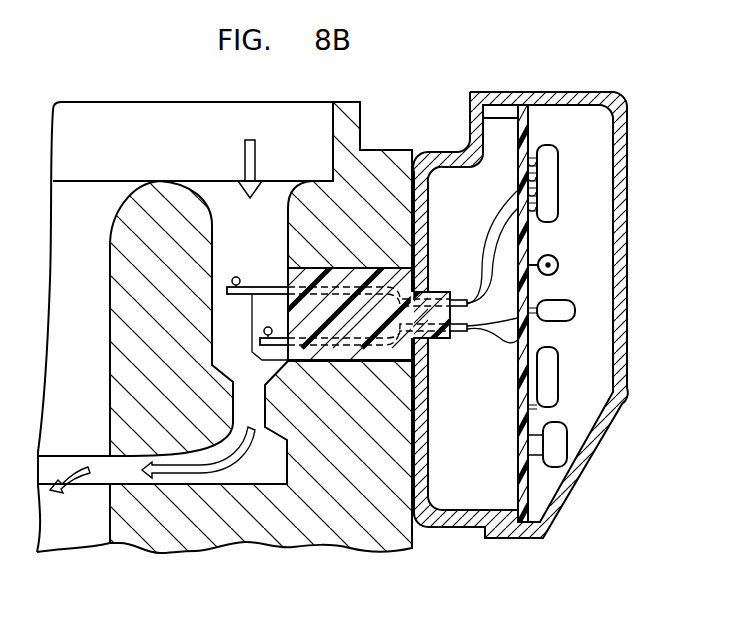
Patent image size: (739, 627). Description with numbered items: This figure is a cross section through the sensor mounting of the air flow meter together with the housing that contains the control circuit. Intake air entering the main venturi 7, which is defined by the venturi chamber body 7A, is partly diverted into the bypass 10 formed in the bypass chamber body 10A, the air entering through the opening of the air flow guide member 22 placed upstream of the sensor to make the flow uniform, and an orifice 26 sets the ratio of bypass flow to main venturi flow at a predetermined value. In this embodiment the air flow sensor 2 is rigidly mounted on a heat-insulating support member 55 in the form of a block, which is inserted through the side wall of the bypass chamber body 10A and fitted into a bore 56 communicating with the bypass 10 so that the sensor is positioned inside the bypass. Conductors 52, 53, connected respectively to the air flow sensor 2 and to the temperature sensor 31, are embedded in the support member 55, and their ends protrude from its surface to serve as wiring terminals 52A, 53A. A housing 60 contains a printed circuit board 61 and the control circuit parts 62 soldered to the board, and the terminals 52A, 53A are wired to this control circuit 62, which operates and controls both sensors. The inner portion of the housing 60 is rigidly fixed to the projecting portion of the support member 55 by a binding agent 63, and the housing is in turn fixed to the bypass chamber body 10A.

The air flow sensor 2 is at (236, 277).
The main venturi 7 is at (86, 255).
The venturi chamber body 7A is at (118, 370).
The bypass 10 is at (227, 202).
The bypass chamber body 10A is at (295, 547).
The air flow guide member 22 is at (292, 190).
The orifice 26 is at (240, 405).
The temperature sensor 31 is at (264, 331).
The conductor 52 is at (252, 287).
The wiring terminal 52A is at (457, 300).
The conductor 53 is at (279, 345).
The wiring terminal 53A is at (462, 332).
The heat-insulating support member 55 is at (375, 280).
The bore 56 is at (348, 363).
The housing 60 is at (570, 91).
The printed circuit board 61 is at (528, 128).
The control circuit parts 62 is at (581, 264).
The binding agent 63 is at (430, 343).